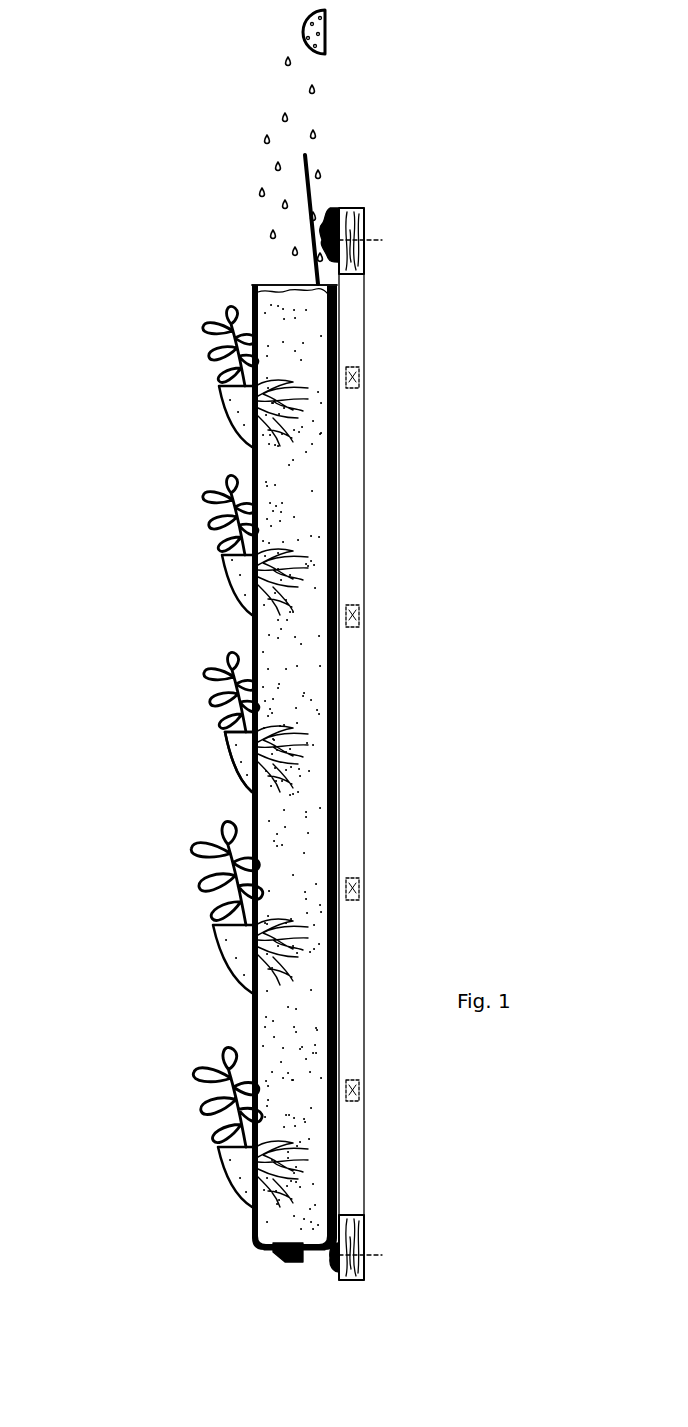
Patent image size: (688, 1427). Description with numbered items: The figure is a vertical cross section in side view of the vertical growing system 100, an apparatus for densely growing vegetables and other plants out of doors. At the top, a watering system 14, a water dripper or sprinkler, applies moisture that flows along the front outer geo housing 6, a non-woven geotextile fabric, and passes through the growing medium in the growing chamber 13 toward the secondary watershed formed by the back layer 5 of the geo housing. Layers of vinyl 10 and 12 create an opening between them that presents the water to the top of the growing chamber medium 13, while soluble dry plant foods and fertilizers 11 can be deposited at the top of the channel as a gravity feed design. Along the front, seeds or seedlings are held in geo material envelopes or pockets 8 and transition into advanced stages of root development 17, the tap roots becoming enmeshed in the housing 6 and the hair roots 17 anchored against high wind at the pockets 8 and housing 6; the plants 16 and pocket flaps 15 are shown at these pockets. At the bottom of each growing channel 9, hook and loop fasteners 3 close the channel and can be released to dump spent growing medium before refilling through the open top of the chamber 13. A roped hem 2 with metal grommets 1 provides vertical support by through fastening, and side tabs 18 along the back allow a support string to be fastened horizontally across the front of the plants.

The vertical growing system 100 is at (88, 238).
The metal grommets 1 is at (322, 235).
The roped hem 2 is at (339, 212).
The hook and loop fasteners 3 is at (281, 1262).
The back layer of geo housing 5 is at (338, 413).
The outer geo housing 6 is at (253, 470).
The seed or seedling geo material envelope 8 is at (219, 402).
The growing channel 9 is at (255, 1232).
The vinyl layer 10 is at (306, 160).
The soluble dry plant foods and fertilizers 11 is at (232, 408).
The vinyl layer 12 is at (340, 318).
The growing chamber 13 is at (281, 285).
The watering system 14 is at (328, 32).
The pocket flap 15 is at (232, 770).
The plants 16 is at (200, 653).
The root development 17 is at (335, 582).
The side tabs 18 is at (355, 375).